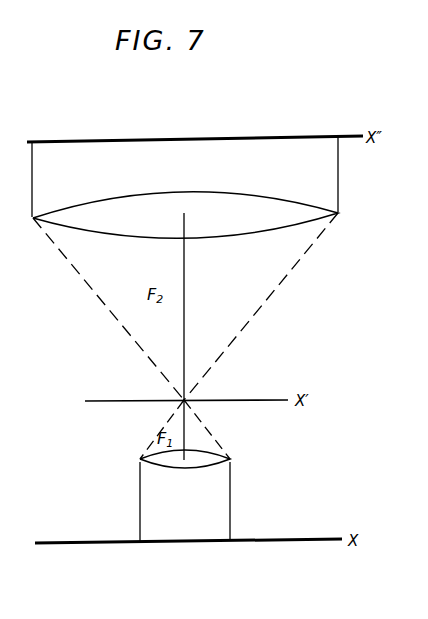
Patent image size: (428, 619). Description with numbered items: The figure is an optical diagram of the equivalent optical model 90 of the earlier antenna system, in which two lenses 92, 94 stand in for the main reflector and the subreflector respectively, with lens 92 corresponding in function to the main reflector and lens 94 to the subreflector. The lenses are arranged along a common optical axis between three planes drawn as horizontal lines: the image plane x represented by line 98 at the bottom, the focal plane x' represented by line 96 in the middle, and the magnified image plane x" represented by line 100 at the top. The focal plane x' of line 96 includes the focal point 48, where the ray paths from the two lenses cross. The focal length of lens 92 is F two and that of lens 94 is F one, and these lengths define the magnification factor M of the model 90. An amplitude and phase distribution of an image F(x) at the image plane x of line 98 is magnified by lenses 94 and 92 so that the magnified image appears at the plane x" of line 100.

The line representing magnified image plane x" 100 is at (263, 136).
The lens 92 is at (320, 215).
The line representing focal plane x' 96 is at (254, 399).
The focal point 48 is at (188, 402).
The lens 94 is at (213, 458).
The line representing image plane x 98 is at (170, 542).
The equivalent optical model 90 is at (308, 549).